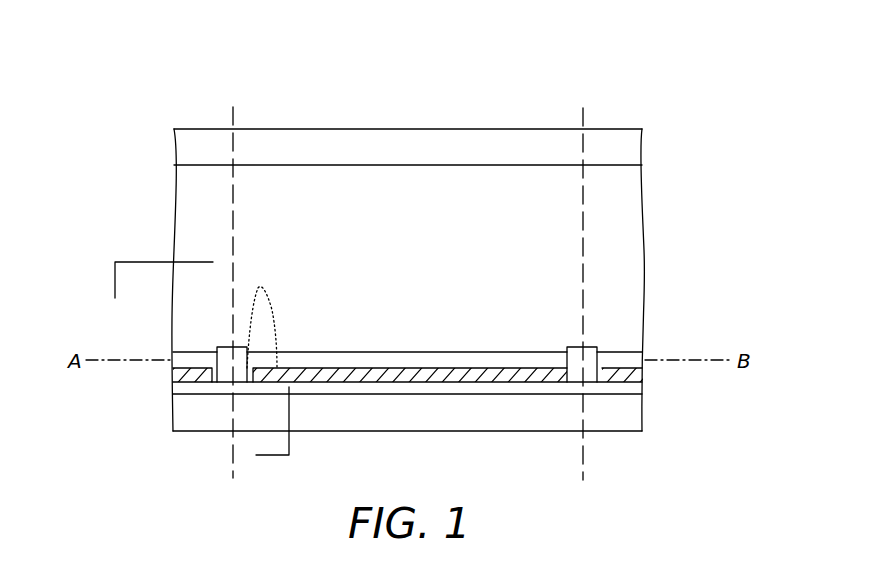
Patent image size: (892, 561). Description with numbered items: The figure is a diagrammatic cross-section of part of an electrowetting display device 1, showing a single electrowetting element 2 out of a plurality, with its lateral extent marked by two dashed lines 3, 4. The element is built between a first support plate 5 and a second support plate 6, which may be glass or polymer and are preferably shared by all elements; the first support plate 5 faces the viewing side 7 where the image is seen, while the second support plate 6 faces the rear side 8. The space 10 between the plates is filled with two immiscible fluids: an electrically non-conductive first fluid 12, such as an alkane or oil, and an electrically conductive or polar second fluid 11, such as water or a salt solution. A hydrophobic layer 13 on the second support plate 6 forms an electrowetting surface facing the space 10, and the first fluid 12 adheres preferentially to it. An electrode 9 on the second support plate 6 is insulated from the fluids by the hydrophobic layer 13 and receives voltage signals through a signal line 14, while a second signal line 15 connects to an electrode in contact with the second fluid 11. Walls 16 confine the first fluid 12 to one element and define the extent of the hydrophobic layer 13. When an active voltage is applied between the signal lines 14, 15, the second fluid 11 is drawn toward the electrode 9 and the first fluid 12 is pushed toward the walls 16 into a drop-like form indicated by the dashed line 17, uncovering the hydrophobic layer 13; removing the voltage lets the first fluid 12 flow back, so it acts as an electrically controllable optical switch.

The electrowetting display device 1 is at (688, 112).
The electrowetting element 2 is at (421, 115).
The dashed line 3 is at (233, 111).
The dashed line 4 is at (584, 112).
The first support plate 5 is at (622, 137).
The second support plate 6 is at (628, 412).
The viewing side 7 is at (287, 129).
The rear side 8 is at (391, 430).
The electrode 9 is at (396, 388).
The space 10 is at (470, 177).
The second fluid 11 is at (625, 255).
The first fluid 12 is at (549, 362).
The hydrophobic layer 13 is at (473, 373).
The signal line 14 is at (273, 455).
The second signal line 15 is at (116, 273).
The walls 16 is at (226, 356).
The dashed line 17 is at (255, 299).